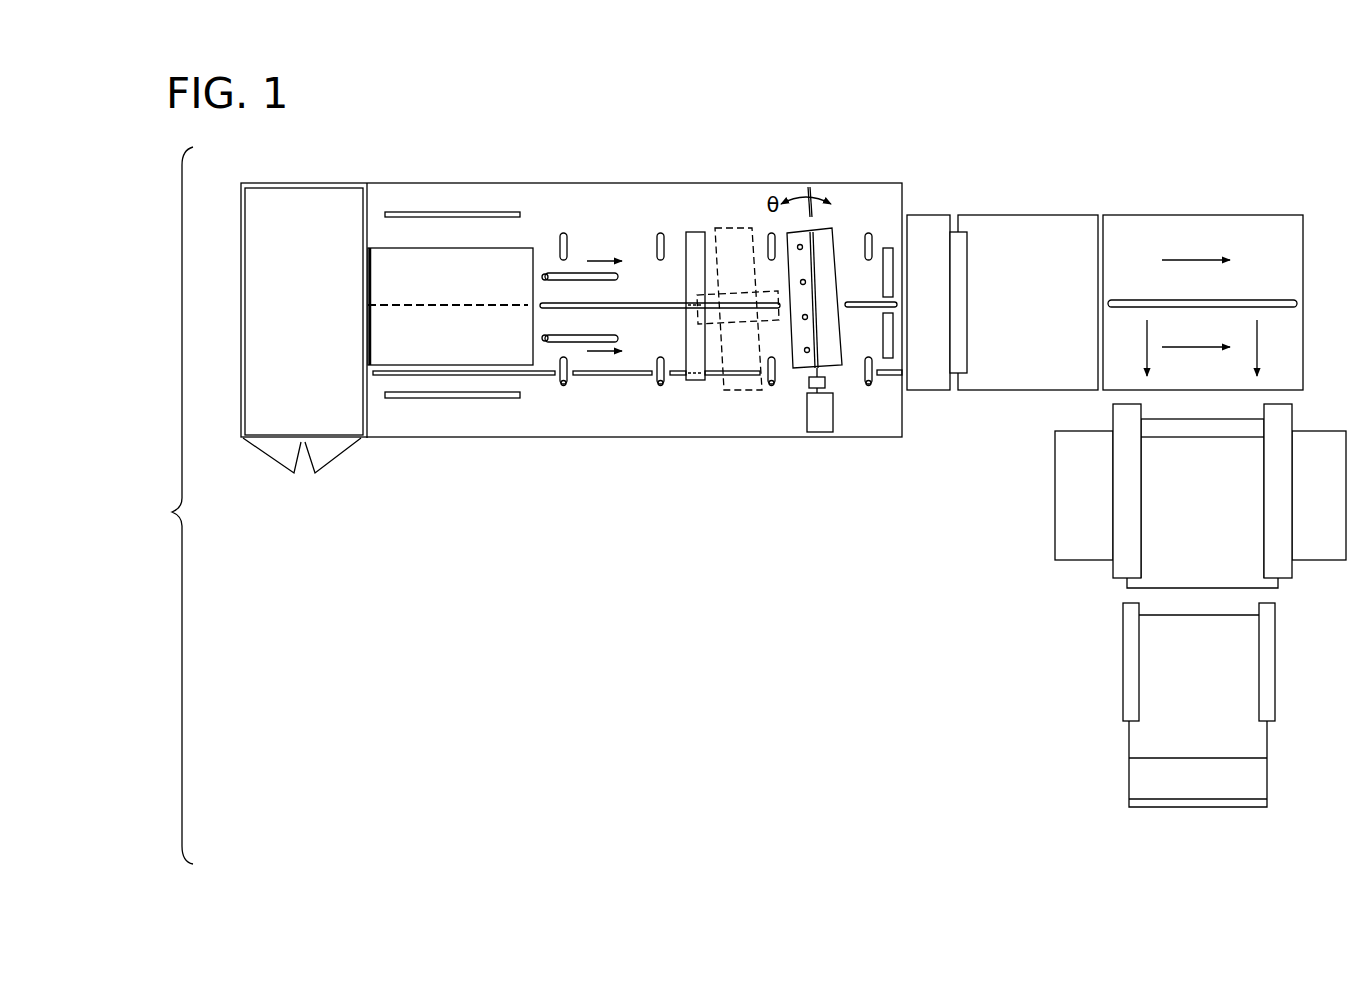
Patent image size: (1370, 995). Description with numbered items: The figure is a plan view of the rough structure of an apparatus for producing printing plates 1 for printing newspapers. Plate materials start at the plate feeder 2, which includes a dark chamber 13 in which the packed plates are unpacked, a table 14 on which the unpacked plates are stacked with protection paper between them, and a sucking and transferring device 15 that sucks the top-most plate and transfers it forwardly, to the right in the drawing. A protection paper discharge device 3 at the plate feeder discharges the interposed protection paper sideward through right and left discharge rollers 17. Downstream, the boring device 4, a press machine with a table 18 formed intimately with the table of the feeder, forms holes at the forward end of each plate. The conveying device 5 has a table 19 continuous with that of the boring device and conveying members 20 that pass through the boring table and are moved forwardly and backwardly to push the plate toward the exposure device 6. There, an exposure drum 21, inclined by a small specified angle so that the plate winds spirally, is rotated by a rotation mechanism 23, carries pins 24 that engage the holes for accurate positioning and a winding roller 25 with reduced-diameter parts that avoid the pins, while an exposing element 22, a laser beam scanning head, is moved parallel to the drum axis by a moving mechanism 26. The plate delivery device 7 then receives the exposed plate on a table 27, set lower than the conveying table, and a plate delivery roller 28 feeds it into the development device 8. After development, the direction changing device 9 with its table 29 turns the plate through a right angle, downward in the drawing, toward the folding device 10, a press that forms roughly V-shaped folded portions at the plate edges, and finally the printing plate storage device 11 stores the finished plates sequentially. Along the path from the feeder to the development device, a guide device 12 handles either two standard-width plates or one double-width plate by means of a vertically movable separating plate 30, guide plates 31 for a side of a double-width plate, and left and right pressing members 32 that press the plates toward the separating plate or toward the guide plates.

The apparatus for producing printing plates 1 is at (1266, 131).
The plate feeder 2 is at (387, 277).
The protection paper discharge device 3 is at (499, 404).
The boring device 4 is at (695, 233).
The conveying device 5 is at (533, 274).
The exposure device 6 is at (832, 358).
The plate delivery device 7 is at (893, 199).
The development device 8 is at (1005, 233).
The direction changing device 9 is at (1168, 229).
The folding device 10 is at (1241, 534).
The printing plate storage device 11 is at (1203, 732).
The guide device 12 is at (643, 299).
The dark chamber 13 is at (284, 413).
The table 14 is at (440, 228).
The sucking and transferring device 15 is at (430, 268).
The discharge rollers 17 is at (462, 212).
The table 18 is at (593, 403).
The table 19 is at (722, 418).
The conveying members 20 is at (545, 275).
The exposure drum 21 is at (825, 240).
The exposing element 22 is at (740, 290).
The rotation mechanism 23 is at (820, 420).
The pins 24 is at (803, 282).
The winding roller 25 is at (815, 332).
The moving mechanism 26 is at (730, 382).
The table 27 is at (890, 238).
The plate delivery roller 28 is at (890, 268).
The table 29 is at (1223, 235).
The separating plate 30 is at (415, 308).
The guide plates 31 is at (460, 380).
The pressing members 32 is at (563, 233).